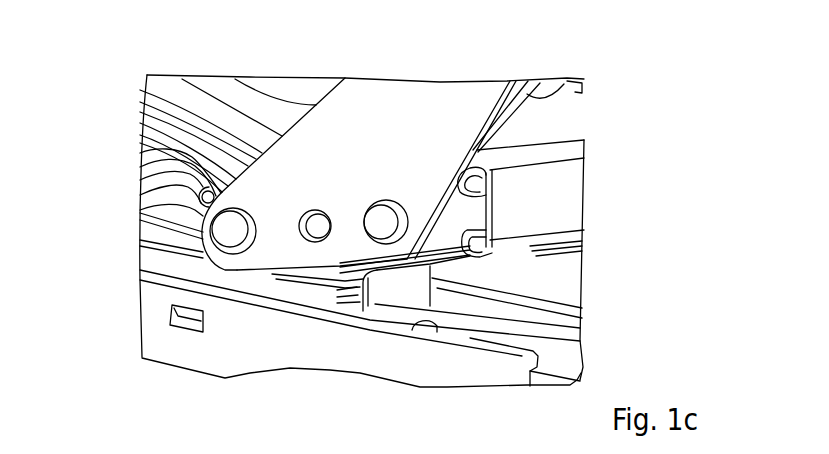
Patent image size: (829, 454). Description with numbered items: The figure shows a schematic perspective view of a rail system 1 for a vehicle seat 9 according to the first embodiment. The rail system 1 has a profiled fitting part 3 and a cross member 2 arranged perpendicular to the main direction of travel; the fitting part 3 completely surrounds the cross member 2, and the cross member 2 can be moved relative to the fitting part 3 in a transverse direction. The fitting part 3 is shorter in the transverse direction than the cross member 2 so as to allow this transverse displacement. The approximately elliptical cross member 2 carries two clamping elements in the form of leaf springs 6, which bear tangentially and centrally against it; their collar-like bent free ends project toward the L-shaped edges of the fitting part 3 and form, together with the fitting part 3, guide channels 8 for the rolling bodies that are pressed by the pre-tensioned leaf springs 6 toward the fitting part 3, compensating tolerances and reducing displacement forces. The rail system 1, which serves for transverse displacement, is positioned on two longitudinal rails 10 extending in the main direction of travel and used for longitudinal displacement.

The rail system 1 is at (613, 94).
The cross member 2 is at (472, 212).
The fitting part 3 is at (563, 212).
The leaf springs 6 is at (477, 247).
The guide channels 8 is at (480, 245).
The vehicle seat 9 is at (397, 115).
The longitudinal rails 10 is at (128, 315).